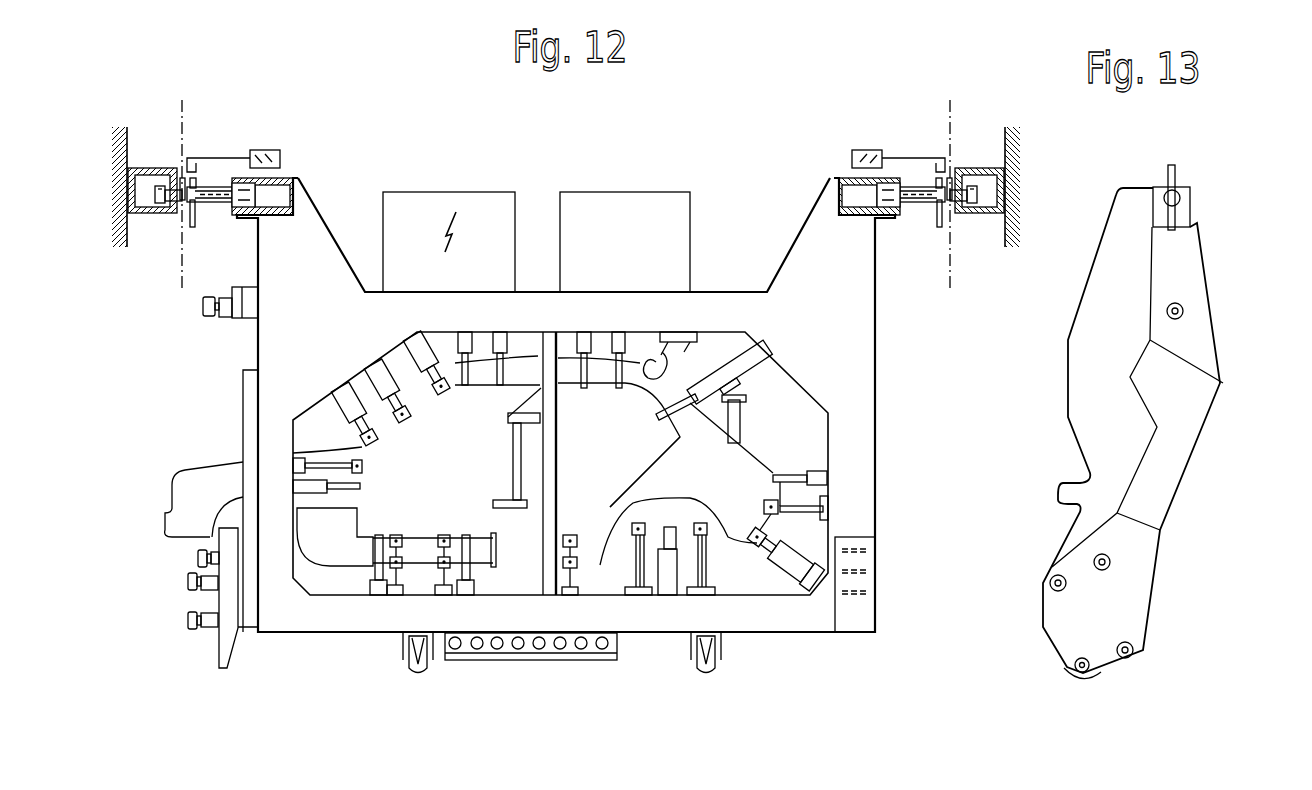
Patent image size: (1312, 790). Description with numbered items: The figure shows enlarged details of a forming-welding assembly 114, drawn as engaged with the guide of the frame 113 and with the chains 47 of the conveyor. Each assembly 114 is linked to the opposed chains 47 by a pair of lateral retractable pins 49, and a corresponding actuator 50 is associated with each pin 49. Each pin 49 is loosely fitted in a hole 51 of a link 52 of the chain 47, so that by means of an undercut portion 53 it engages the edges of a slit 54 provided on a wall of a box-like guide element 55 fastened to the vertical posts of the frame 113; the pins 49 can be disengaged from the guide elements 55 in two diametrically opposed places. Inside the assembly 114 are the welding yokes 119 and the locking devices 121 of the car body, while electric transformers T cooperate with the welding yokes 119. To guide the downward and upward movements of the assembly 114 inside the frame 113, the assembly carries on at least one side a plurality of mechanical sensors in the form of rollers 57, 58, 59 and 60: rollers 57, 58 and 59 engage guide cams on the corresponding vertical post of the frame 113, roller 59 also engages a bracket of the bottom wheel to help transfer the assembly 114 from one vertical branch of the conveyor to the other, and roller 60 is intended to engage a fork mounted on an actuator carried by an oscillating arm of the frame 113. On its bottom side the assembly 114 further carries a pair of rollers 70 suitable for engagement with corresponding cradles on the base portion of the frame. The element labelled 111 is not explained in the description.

In FIG. 12, the chain 47 is at (180, 254).
In FIG. 12, the retractable pin 49 is at (212, 190).
In FIG. 13, the retractable pin 49 is at (1178, 198).
In FIG. 12, the actuator 50 is at (285, 159).
In FIG. 12, the hole 51 is at (198, 187).
In FIG. 12, the link 52 is at (190, 226).
In FIG. 12, the undercut portion 53 is at (160, 204).
In FIG. 12, the slit 54 is at (168, 190).
In FIG. 12, the box-like guide element 55 is at (128, 180).
In FIG. 12, the roller 57 is at (188, 620).
In FIG. 13, the roller 57 is at (1134, 653).
In FIG. 12, the roller 58 is at (188, 581).
In FIG. 13, the roller 58 is at (1053, 587).
In FIG. 12, the roller 59 is at (197, 558).
In FIG. 13, the roller 59 is at (1112, 562).
In FIG. 12, the roller 60 is at (210, 318).
In FIG. 13, the roller 60 is at (1183, 303).
In FIG. 12, the roller 70 is at (412, 673).
In FIG. 13, the roller 70 is at (1067, 673).
In FIG. 12, the plate 111 is at (745, 462).
In FIG. 12, the frame 113 is at (125, 212).
In FIG. 12, the forming-welding assembly 114 is at (710, 296).
In FIG. 13, the forming-welding assembly 114 is at (1200, 463).
In FIG. 12, the welding yoke 119 is at (668, 366).
In FIG. 12, the locking device 121 is at (500, 337).
In FIG. 12, the electric transformer T is at (468, 186).